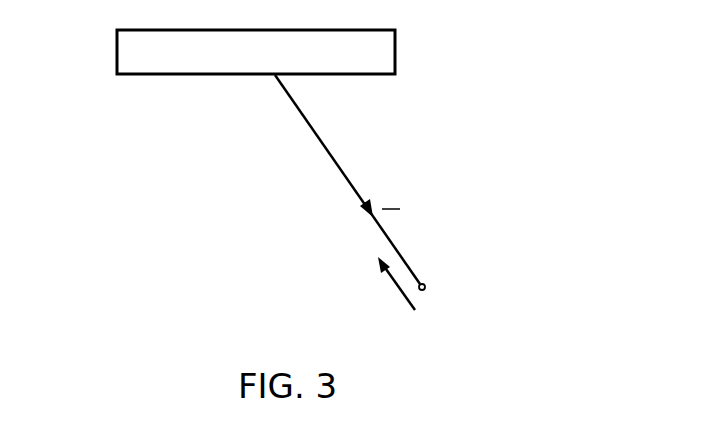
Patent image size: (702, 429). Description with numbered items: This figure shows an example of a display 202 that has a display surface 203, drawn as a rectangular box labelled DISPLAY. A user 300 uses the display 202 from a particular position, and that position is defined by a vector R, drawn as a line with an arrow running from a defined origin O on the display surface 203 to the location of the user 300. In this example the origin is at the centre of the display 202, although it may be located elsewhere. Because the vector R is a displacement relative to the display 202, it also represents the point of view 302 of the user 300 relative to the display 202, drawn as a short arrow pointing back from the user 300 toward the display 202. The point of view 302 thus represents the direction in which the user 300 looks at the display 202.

The display 202 is at (396, 52).
The display surface 203 is at (160, 76).
The user 300 is at (426, 285).
The point of view 302 is at (394, 284).